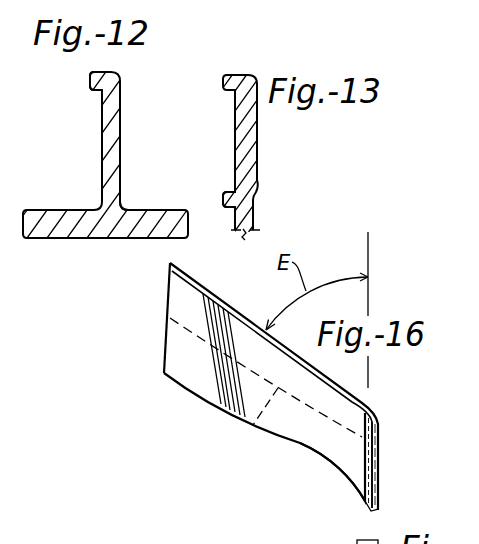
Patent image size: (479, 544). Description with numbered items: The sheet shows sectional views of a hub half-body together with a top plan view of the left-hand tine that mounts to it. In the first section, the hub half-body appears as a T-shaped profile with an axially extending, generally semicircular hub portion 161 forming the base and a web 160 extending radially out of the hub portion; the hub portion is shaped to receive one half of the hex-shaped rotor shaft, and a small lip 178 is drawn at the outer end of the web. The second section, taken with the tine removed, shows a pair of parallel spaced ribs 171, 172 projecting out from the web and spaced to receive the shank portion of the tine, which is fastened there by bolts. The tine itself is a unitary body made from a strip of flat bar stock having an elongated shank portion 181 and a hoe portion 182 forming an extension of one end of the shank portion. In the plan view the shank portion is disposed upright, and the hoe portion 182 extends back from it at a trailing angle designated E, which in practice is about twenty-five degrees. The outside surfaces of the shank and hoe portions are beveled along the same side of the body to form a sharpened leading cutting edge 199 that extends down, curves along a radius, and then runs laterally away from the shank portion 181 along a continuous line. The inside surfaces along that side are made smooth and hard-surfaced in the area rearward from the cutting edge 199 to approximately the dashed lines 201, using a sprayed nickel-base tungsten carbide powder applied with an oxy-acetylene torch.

In FIG. 12, the web 160 is at (120, 124).
In FIG. 12, the hub portion 161 is at (148, 209).
In FIG. 12, the top lip of strip 178 is at (90, 80).
In FIG. 13, the rib 171 is at (223, 79).
In FIG. 13, the rib 172 is at (223, 197).
In FIG. 16, the hoe portion 182 is at (203, 366).
In FIG. 16, the dashed lines 201 is at (252, 420).
In FIG. 16, the sharpened leading cutting edge 199 is at (317, 454).
In FIG. 16, the shank portion 181 is at (375, 439).